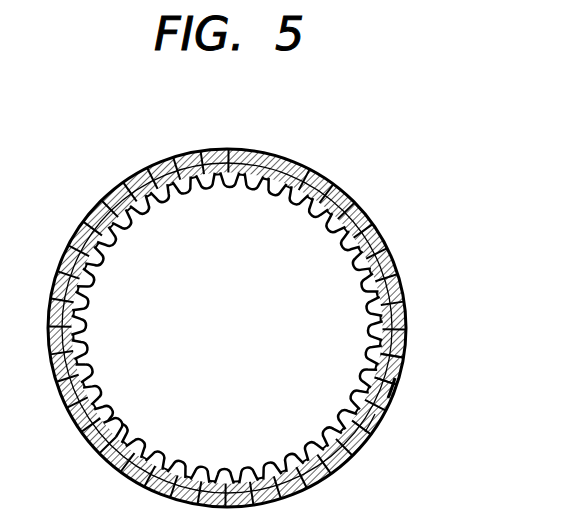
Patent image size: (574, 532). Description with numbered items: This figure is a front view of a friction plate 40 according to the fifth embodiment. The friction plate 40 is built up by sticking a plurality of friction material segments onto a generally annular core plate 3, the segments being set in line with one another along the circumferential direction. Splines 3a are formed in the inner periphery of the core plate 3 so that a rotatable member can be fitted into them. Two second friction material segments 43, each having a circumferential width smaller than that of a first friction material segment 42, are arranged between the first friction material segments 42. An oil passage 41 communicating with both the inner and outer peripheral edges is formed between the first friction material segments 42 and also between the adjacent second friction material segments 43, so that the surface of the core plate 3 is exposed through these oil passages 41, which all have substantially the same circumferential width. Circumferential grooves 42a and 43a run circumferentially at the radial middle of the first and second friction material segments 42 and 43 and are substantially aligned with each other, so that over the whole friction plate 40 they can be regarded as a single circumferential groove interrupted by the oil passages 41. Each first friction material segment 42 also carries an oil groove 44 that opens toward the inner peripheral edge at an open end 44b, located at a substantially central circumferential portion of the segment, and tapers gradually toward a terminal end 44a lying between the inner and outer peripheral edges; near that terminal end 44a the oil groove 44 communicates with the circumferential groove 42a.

The friction plate 40 is at (290, 295).
The oil passage 41 is at (300, 170).
The first friction material segment 42 is at (221, 152).
The second friction material segment 43 is at (263, 157).
The oil groove 44 is at (283, 328).
The terminal end 44a is at (403, 370).
The open end 44b is at (370, 372).
The circumferential groove 42a is at (395, 395).
The circumferential groove 43a is at (385, 418).
The core plate 3 is at (226, 327).
The splines 3a is at (128, 220).